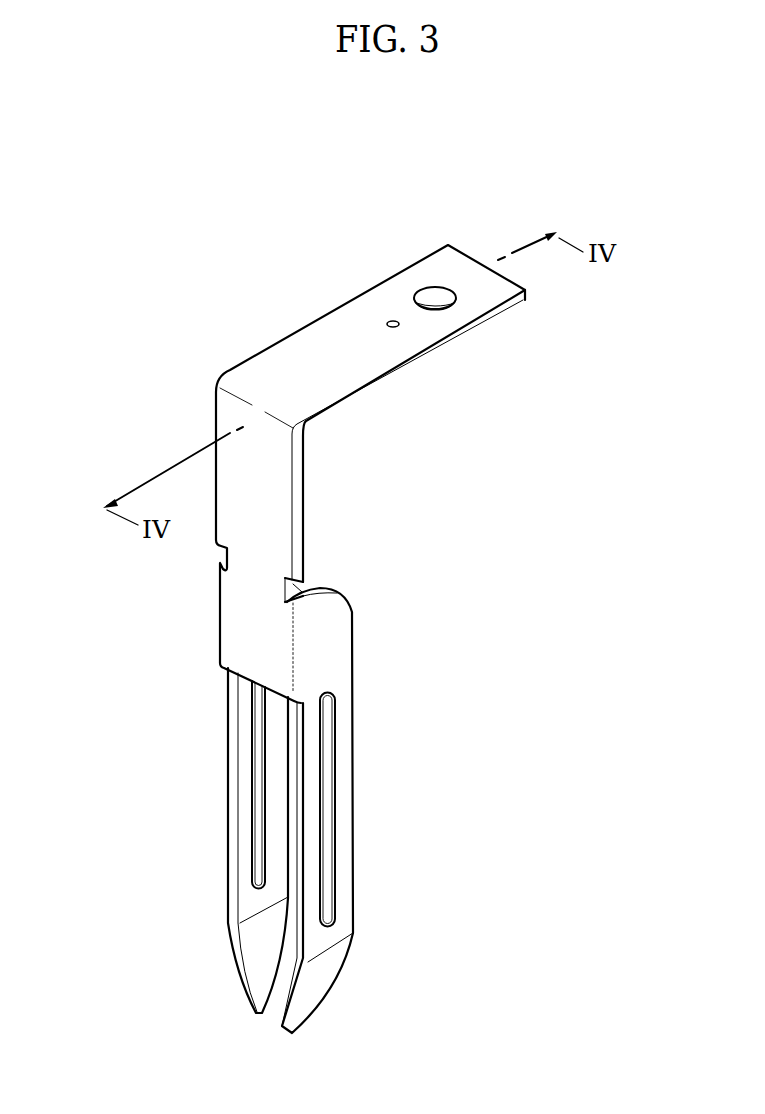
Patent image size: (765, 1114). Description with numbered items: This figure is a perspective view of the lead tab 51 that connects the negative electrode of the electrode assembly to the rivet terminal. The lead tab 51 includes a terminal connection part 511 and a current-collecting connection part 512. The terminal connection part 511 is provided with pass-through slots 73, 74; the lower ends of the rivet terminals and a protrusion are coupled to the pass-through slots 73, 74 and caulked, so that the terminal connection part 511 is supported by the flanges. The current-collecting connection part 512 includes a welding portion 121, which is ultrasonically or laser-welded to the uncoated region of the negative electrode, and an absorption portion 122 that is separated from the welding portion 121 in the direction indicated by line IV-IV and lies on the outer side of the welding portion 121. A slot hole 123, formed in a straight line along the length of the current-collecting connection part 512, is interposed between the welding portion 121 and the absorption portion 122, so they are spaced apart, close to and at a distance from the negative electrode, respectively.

The lead tab 51 is at (318, 163).
The terminal connection part 511 is at (316, 343).
The current-collecting connection part 512 is at (191, 624).
The pass-through slot 73 is at (430, 290).
The pass-through slot 74 is at (393, 322).
The welding portion 121 is at (342, 737).
The absorption portion 122 is at (310, 795).
The slot hole 123 is at (328, 855).